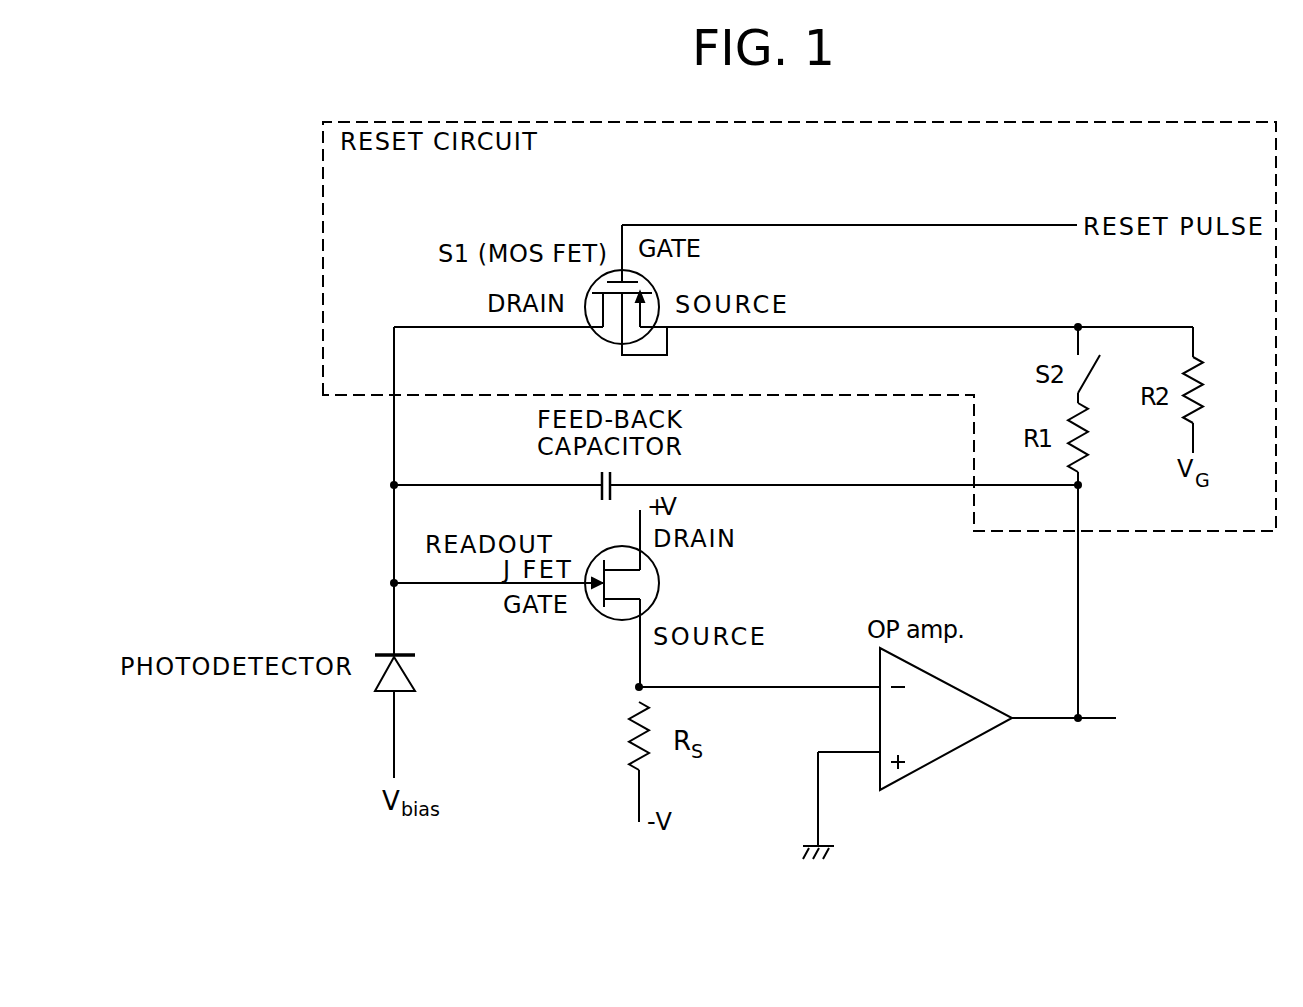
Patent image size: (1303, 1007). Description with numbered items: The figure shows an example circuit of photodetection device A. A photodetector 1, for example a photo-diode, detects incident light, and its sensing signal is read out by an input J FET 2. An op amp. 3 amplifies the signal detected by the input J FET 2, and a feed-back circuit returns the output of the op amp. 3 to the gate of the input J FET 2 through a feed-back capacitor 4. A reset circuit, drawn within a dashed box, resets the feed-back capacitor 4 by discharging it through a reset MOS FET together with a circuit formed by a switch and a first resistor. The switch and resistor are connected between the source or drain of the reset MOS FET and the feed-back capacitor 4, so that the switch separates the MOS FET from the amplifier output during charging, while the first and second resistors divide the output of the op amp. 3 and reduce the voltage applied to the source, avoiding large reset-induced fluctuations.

The photodetector 1 is at (410, 677).
The input J FET 2 is at (660, 583).
The op amp. 3 is at (978, 698).
The feed-back capacitor 4 is at (601, 491).